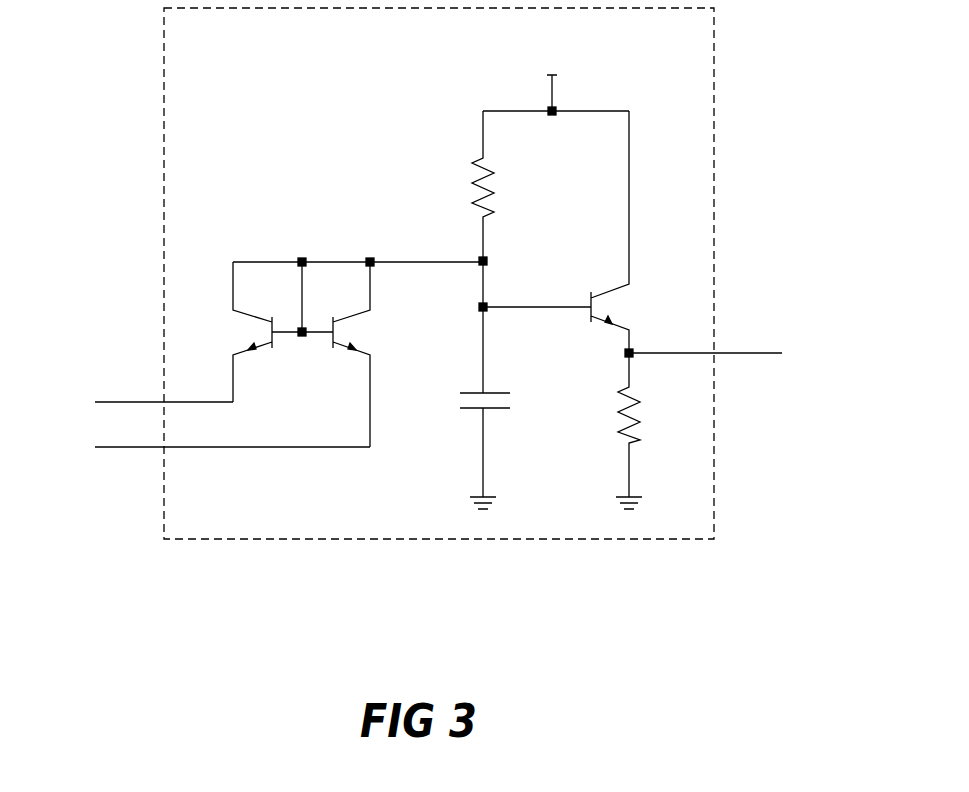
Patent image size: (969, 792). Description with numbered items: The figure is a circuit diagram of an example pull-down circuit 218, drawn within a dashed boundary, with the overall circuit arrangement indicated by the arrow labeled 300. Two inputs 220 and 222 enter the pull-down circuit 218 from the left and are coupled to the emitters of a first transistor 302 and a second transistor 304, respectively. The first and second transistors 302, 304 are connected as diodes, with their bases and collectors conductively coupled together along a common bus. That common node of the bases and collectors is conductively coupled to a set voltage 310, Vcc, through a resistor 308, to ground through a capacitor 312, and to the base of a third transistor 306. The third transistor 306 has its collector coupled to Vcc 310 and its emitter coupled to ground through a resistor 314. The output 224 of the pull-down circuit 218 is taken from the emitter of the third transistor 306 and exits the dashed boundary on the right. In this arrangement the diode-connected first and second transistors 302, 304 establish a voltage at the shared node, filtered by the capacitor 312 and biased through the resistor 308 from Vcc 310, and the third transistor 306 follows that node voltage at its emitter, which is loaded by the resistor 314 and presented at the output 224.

The pull-down circuit 218 is at (218, 46).
The level shifter circuit 300 is at (378, 185).
The first transistor 302 is at (265, 354).
The second transistor 304 is at (370, 339).
The third transistor 306 is at (588, 293).
The resistor 308 is at (499, 194).
The set voltage 310 is at (530, 67).
The capacitor 312 is at (473, 413).
The resistor 314 is at (612, 423).
The input 220 is at (138, 463).
The input 222 is at (142, 385).
The output 224 is at (750, 335).